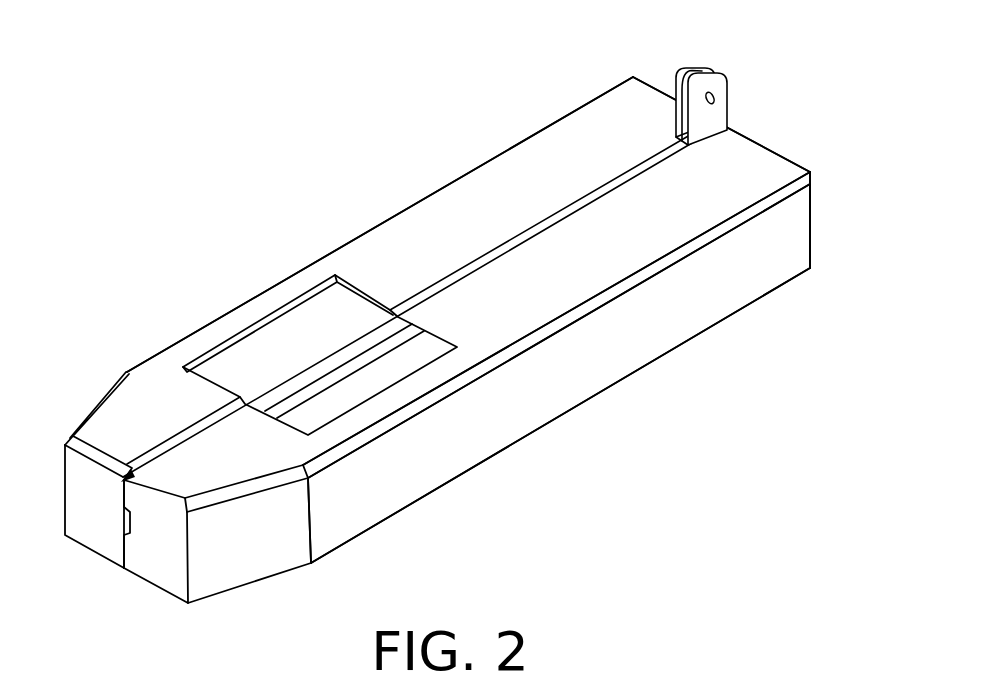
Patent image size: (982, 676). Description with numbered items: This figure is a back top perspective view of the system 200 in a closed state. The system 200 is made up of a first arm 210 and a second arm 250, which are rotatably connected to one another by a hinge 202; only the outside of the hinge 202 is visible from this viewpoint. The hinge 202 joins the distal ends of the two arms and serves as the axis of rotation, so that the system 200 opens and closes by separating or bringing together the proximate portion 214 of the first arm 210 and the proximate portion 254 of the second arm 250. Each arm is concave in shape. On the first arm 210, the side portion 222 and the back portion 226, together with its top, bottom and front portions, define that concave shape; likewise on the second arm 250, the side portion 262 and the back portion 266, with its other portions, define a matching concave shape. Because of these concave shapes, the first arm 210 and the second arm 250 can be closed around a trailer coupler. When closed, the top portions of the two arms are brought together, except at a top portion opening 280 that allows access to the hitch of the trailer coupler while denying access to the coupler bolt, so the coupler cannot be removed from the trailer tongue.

The system 200 is at (778, 383).
The first arm 210 is at (549, 273).
The second arm 250 is at (470, 228).
The side portion 262 is at (416, 193).
The top portion opening 280 is at (305, 319).
The proximate portion 254 is at (639, 80).
The proximate portion 214 is at (810, 205).
The side portion 222 is at (483, 427).
The back portion 226 is at (159, 563).
The back portion 266 is at (58, 472).
The hinge 202 is at (117, 524).